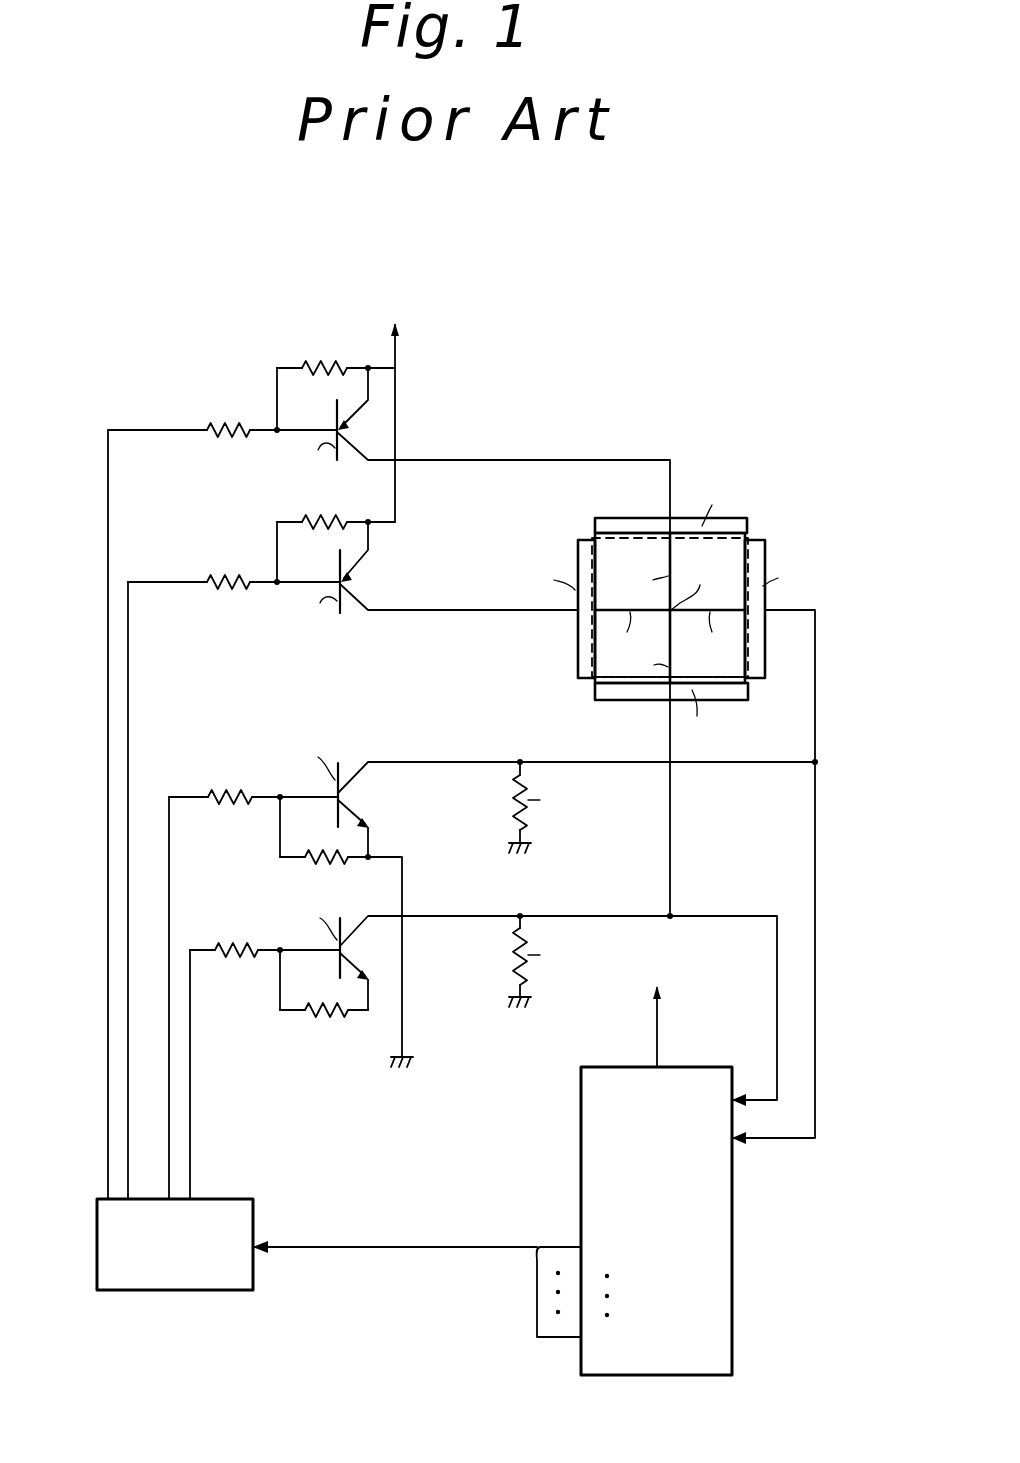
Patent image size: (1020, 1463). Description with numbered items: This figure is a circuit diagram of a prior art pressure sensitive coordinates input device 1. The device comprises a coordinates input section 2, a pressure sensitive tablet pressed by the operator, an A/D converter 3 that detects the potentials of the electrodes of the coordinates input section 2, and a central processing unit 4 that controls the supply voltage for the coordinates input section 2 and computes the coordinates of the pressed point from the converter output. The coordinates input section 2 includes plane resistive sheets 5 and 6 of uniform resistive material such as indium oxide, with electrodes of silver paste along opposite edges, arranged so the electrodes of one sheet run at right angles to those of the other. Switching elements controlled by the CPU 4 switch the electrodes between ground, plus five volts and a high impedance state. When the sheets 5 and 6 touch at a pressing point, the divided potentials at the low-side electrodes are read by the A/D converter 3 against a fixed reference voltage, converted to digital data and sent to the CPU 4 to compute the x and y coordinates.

The coordinates input device 1 is at (358, 1332).
The coordinates input section 2 is at (782, 520).
The A/D converter 3 is at (716, 1290).
The central processing unit (CPU) 4 is at (227, 1213).
The plane resistive sheet 5 is at (597, 548).
The plane resistive sheet 6 is at (604, 666).